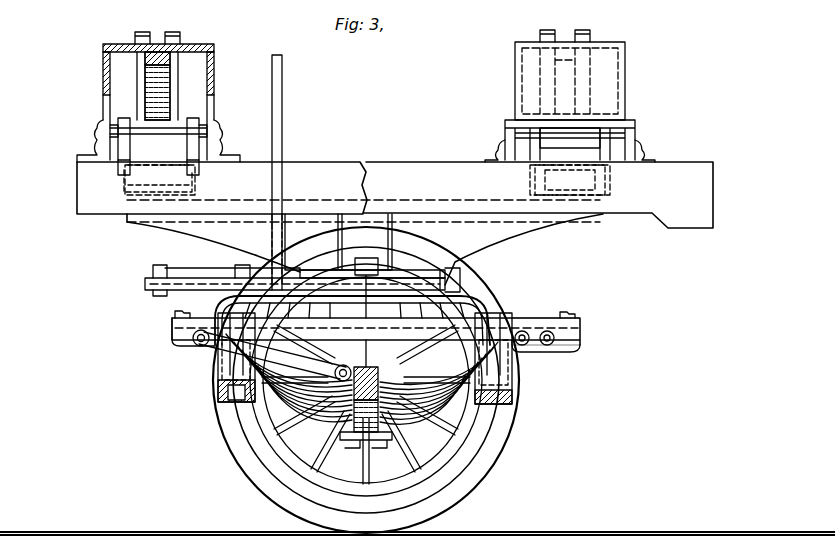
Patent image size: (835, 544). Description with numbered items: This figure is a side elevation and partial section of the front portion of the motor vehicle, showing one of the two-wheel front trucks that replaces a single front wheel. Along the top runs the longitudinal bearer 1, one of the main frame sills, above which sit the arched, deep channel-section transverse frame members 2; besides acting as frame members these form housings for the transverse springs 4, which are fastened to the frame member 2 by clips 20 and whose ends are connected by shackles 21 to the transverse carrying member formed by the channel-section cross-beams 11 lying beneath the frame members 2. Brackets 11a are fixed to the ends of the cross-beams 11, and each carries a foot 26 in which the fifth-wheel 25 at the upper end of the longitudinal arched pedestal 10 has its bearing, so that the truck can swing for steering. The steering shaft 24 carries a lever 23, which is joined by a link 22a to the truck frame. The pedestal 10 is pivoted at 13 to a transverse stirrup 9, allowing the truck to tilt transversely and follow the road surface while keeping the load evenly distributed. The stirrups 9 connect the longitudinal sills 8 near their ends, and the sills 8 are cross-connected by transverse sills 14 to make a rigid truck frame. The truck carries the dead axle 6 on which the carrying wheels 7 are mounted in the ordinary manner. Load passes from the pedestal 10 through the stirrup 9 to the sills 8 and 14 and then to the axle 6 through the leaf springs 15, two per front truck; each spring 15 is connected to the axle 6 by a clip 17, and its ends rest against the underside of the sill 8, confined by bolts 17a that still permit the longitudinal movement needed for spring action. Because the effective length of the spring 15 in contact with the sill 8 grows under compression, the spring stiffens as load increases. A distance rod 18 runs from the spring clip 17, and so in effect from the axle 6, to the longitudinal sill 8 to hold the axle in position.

The longitudinal bearer 1 is at (405, 168).
The transverse frame member 2 is at (214, 72).
The transverse spring 4 is at (147, 88).
The axle 6 is at (330, 410).
The carrying wheel 7 is at (275, 458).
The longitudinal sill 8 is at (183, 342).
The transverse stirrup 9 is at (232, 403).
The arched pedestal 10 is at (245, 300).
The cross-beam 11 is at (130, 180).
The bracket 11a is at (495, 236).
The pivot 13 is at (228, 390).
The transverse sill 14 is at (168, 313).
The front truck spring 15 is at (268, 478).
The spring clip 17 is at (368, 366).
The bolt 17a is at (555, 350).
The distance rod 18 is at (222, 348).
The clip 20 is at (137, 62).
The shackle 21 is at (590, 148).
The link 22a is at (153, 268).
The lever 23 is at (240, 276).
The steering shaft 24 is at (283, 140).
The fifth-wheel 25 is at (452, 285).
The foot 26 is at (398, 276).